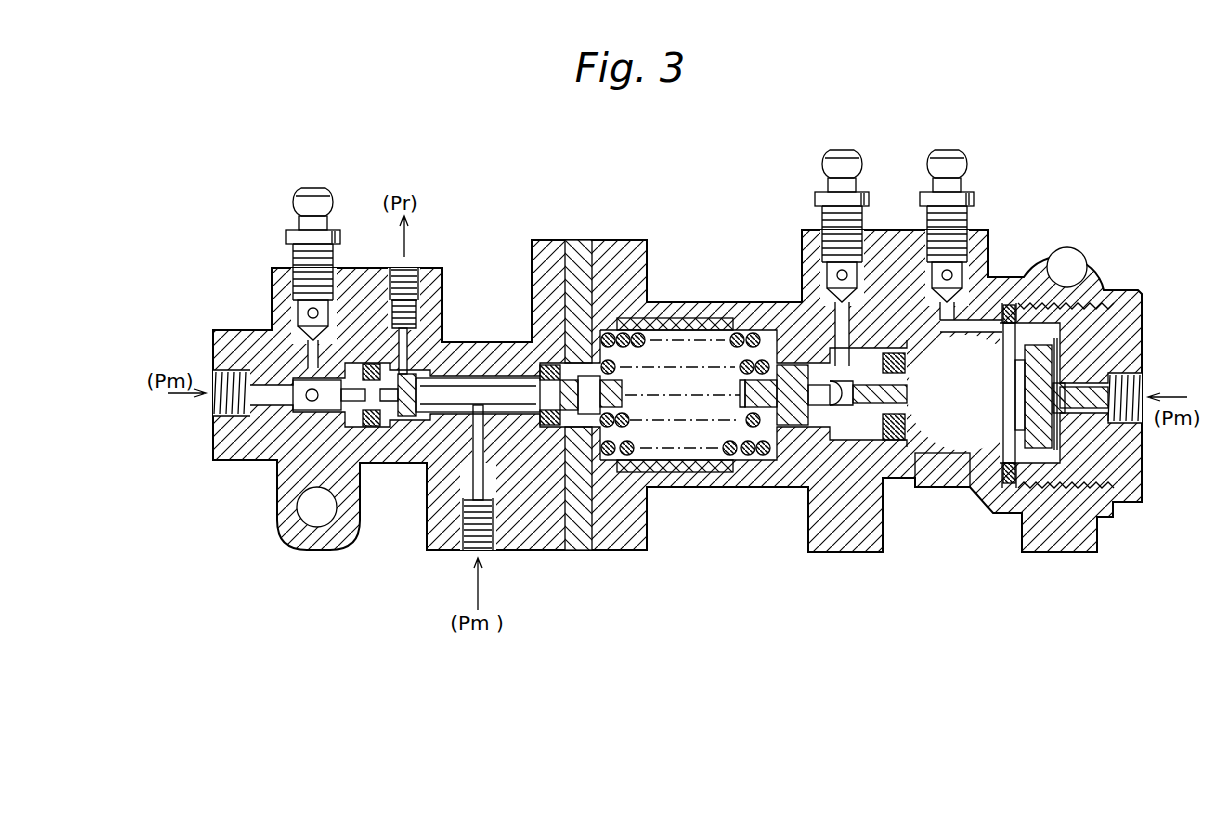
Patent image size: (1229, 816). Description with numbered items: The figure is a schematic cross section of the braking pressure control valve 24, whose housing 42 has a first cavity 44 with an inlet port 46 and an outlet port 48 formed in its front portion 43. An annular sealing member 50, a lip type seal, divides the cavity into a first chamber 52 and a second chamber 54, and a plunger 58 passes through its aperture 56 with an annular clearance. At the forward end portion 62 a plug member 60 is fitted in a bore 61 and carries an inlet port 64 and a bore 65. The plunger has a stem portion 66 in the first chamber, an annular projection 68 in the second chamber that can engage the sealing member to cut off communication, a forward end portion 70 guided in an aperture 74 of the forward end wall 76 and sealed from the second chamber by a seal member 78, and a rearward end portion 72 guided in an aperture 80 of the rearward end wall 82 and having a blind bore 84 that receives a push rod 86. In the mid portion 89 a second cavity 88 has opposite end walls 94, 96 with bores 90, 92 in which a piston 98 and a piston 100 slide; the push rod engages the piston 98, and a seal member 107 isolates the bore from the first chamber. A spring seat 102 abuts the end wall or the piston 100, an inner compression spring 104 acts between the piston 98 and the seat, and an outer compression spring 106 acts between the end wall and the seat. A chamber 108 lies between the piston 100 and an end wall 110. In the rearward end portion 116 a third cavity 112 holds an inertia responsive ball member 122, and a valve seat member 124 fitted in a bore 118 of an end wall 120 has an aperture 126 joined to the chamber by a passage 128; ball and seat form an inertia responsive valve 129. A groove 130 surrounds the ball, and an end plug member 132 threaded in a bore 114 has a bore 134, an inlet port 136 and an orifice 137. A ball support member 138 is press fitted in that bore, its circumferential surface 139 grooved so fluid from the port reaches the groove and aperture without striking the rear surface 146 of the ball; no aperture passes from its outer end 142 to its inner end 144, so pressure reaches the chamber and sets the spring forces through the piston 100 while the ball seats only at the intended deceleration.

The braking pressure control valve 24 is at (659, 236).
The housing 42 is at (617, 253).
The front portion 43 is at (455, 440).
The first cavity 44 is at (503, 365).
The inlet port 46 is at (485, 550).
The outlet port 48 is at (400, 270).
The annular sealing member 50 is at (445, 540).
The first chamber 52 is at (462, 372).
The second chamber 54 is at (418, 368).
The aperture 56 is at (433, 357).
The plunger 58 is at (458, 527).
The plug member 60 is at (218, 450).
The bore 61 is at (233, 330).
The forward end portion 62 is at (273, 272).
The inlet port 64 is at (213, 407).
The bore 65 is at (300, 410).
The stem portion 66 is at (455, 380).
The annular projection 68 is at (408, 413).
The forward end portion 70 is at (370, 428).
The rearward end portion 72 is at (600, 440).
The aperture 74 is at (368, 362).
The forward end wall 76 is at (380, 428).
The seal member 78 is at (345, 275).
The aperture 80 is at (540, 240).
The rearward end wall 82 is at (572, 327).
The blind bore 84 is at (565, 430).
The push rod 86 is at (555, 440).
The second cavity 88 is at (760, 317).
The mid portion 89 is at (700, 307).
The bore 90 is at (640, 470).
The bore 92 is at (845, 432).
The end wall 94 is at (672, 470).
The end wall 96 is at (720, 470).
The piston 98 is at (600, 330).
The piston 100 is at (790, 365).
The spring seat 102 is at (760, 487).
The inner compression spring 104 is at (667, 367).
The outer compression spring 106 is at (722, 327).
The seal member 107 is at (570, 430).
The chamber 108 is at (830, 445).
The end wall 110 is at (810, 300).
The third cavity 112 is at (950, 487).
The bore 114 is at (1040, 245).
The rearward end portion 116 is at (975, 227).
The bore 118 is at (880, 345).
The end wall 120 is at (900, 483).
The ball member 122 is at (952, 430).
The valve seat member 124 is at (910, 480).
The aperture 126 is at (906, 380).
The passage 128 is at (875, 442).
The inertia responsive valve 129 is at (1005, 485).
The groove 130 is at (1000, 320).
The end plug member 132 is at (1137, 312).
The bore 134 is at (1113, 290).
The inlet port 136 is at (1133, 380).
The orifice 137 is at (1113, 507).
The ball support member 138 is at (1040, 453).
The circumferential surface 139 is at (1020, 367).
The outer end 142 is at (1050, 358).
The inner end 144 is at (1025, 380).
The rear surface 146 is at (1067, 403).